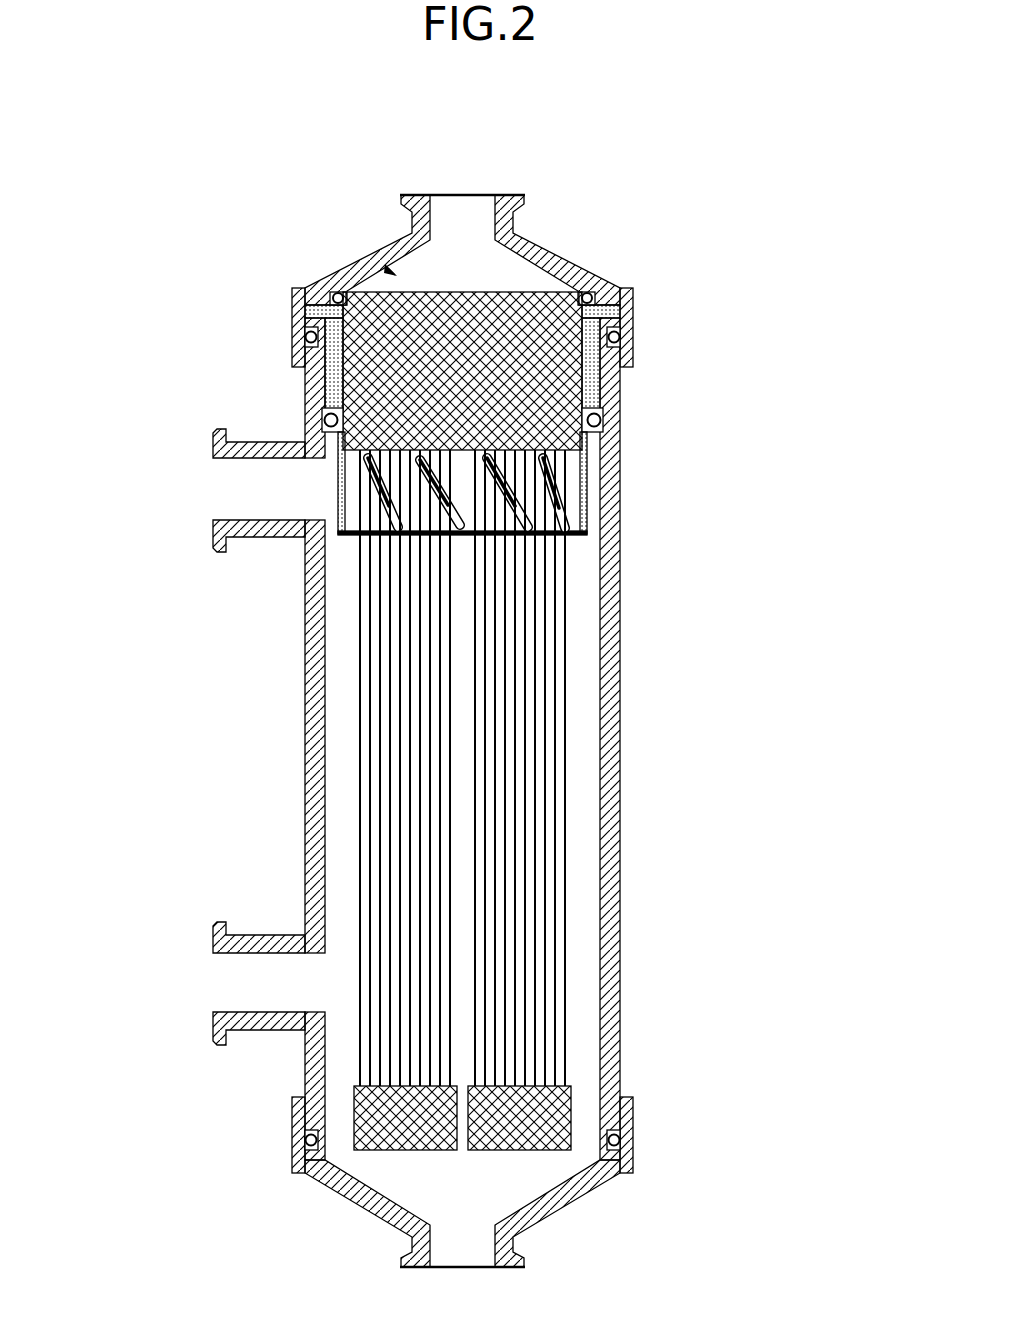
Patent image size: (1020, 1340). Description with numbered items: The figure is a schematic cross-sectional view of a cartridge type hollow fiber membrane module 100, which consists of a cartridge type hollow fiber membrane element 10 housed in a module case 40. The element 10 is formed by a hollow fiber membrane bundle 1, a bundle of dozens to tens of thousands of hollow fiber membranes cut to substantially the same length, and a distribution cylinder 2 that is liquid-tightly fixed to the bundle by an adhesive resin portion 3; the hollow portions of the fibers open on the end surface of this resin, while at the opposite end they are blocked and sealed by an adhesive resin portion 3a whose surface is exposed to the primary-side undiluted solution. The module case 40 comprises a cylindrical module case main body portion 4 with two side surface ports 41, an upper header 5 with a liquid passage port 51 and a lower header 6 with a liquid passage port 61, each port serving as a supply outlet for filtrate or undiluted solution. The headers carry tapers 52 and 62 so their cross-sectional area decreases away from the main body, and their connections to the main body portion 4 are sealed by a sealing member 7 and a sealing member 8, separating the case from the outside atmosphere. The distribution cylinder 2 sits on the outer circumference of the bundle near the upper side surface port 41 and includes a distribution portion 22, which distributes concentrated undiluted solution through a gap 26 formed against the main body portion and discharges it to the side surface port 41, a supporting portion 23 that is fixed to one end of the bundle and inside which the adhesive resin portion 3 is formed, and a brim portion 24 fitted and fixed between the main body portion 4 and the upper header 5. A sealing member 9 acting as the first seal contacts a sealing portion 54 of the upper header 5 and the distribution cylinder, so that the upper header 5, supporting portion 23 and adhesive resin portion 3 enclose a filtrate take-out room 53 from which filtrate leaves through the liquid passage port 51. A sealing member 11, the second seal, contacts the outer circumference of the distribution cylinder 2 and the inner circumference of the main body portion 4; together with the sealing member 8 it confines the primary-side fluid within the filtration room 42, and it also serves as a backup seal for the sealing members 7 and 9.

The cartridge type hollow fiber membrane module 100 is at (453, 165).
The hollow fiber membrane bundle 1 is at (546, 740).
The distribution cylinder 2 is at (320, 392).
The adhesive resin portion 3 is at (562, 336).
The adhesive resin portion 3a is at (566, 1097).
The module case main body portion 4 is at (612, 678).
The upper header 5 is at (590, 264).
The lower header 6 is at (563, 1198).
The sealing member 7 is at (617, 338).
The sealing member 8 is at (616, 1142).
The sealing member 9 is at (612, 294).
The cartridge type hollow fiber membrane element 10 is at (390, 271).
The sealing member 11 is at (601, 422).
The distribution portion 22 is at (583, 521).
The supporting portion 23 is at (599, 386).
The brim portion 24 is at (621, 312).
The gap 26 is at (590, 490).
The module case 40 is at (658, 634).
The side surface port 41 is at (262, 538).
The filtration room 42 is at (583, 566).
The liquid passage port 51 is at (486, 207).
The taper 52 is at (394, 243).
The filtrate take-out room 53 is at (512, 258).
The sealing portion 54 is at (334, 292).
The liquid passage port 61 is at (488, 1266).
The taper 62 is at (368, 1178).